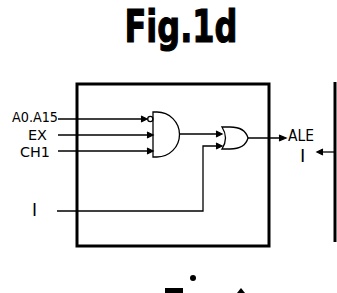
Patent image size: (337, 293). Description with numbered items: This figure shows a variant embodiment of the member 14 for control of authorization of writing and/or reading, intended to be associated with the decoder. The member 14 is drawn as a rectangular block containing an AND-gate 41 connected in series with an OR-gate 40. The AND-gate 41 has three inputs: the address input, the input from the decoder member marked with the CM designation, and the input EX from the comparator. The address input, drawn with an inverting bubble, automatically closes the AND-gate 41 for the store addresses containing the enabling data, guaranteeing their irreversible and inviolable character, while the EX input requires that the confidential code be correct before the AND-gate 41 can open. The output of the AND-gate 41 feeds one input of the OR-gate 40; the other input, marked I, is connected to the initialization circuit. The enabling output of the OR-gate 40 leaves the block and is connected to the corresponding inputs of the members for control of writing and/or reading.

The member for control of authorization of writing and/or reading 14 is at (100, 243).
The AND-gate 41 is at (170, 127).
The OR-gate 40 is at (237, 128).